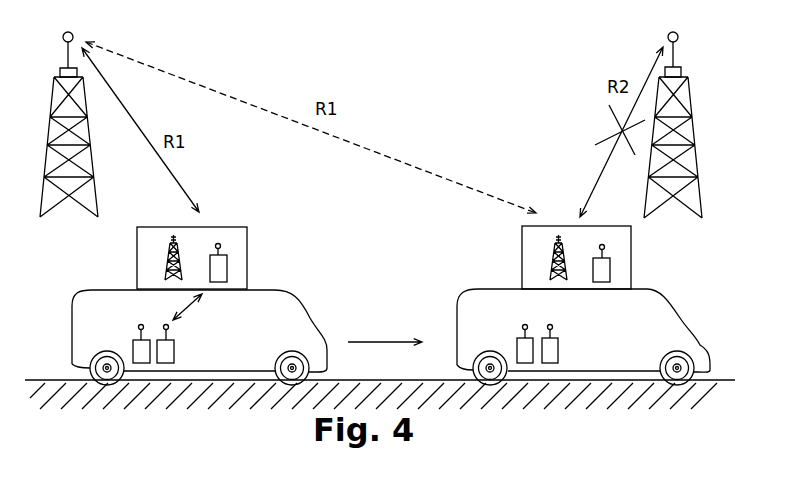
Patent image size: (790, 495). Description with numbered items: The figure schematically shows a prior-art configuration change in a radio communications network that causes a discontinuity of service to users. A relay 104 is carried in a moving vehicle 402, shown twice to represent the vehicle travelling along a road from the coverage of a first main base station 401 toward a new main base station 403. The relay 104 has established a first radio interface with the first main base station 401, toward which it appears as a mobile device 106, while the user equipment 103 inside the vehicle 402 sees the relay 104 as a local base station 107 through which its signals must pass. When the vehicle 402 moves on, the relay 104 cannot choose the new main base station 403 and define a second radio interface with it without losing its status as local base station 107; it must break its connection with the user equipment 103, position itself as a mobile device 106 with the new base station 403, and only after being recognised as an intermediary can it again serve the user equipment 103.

The user equipment 103 is at (174, 350).
The relay 104 is at (228, 227).
The mobile device 106 is at (227, 268).
The local base station 107 is at (166, 263).
The first main base station 401 is at (40, 213).
The moving vehicle 402 is at (282, 320).
The new main base station 403 is at (692, 145).